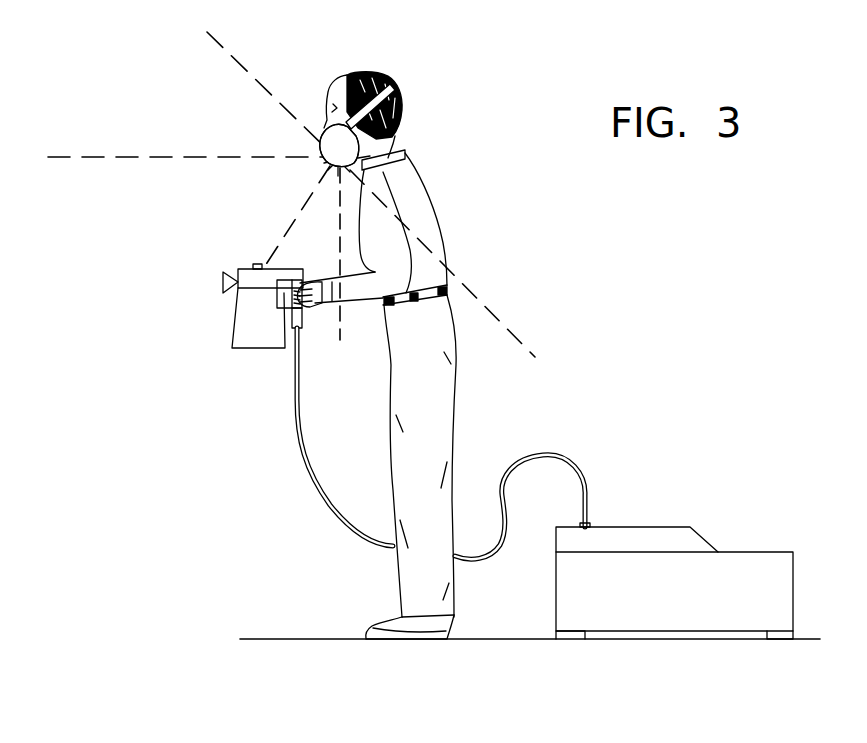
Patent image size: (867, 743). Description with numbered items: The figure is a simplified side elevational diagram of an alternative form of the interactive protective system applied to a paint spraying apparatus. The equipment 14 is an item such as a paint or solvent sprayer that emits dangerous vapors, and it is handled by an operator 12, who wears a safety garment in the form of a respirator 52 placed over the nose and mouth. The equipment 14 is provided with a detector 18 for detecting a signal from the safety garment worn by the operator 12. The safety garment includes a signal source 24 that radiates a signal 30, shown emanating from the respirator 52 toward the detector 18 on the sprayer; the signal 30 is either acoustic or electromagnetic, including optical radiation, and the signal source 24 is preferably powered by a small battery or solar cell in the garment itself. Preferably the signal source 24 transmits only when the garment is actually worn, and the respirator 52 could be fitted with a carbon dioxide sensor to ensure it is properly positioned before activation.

The operator 12 is at (436, 353).
The equipment 14 is at (240, 335).
The detector 18 is at (256, 264).
The signal source 24 is at (329, 163).
The signal 30 is at (133, 157).
The respirator 52 is at (326, 133).